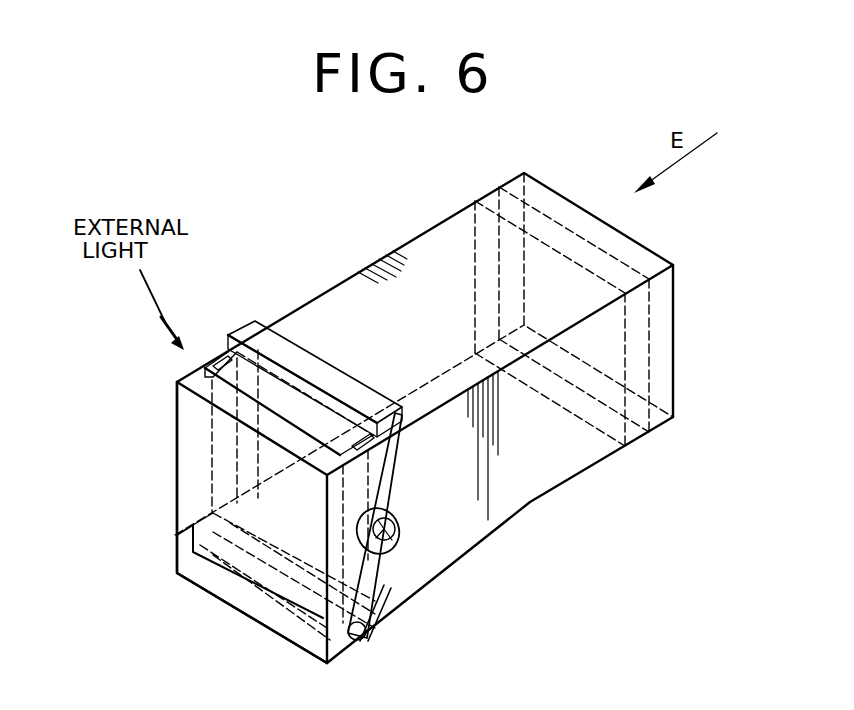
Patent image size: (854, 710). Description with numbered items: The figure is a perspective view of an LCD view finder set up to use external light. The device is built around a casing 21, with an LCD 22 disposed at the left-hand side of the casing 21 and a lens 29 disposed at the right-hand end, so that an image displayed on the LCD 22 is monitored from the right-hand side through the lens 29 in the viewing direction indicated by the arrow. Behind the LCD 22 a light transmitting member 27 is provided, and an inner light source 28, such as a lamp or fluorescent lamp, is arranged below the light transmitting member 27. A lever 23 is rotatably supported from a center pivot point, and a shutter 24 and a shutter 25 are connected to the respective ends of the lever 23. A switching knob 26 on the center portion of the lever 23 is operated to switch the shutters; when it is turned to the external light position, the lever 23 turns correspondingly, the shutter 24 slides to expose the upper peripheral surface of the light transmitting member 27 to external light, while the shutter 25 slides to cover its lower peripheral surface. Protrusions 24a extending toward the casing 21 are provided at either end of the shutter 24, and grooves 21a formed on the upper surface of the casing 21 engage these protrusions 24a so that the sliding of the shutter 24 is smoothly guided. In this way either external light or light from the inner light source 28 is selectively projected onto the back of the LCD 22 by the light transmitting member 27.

The casing 21 is at (423, 236).
The grooves 21a is at (213, 360).
The LCD 22 is at (240, 446).
The lever 23 is at (400, 452).
The shutter 24 is at (252, 322).
The protrusions 24a is at (227, 352).
The shutter 25 is at (385, 603).
The switching knob 26 is at (400, 519).
The light transmitting member 27 is at (213, 402).
The inner light source 28 is at (366, 640).
The lens 29 is at (542, 222).